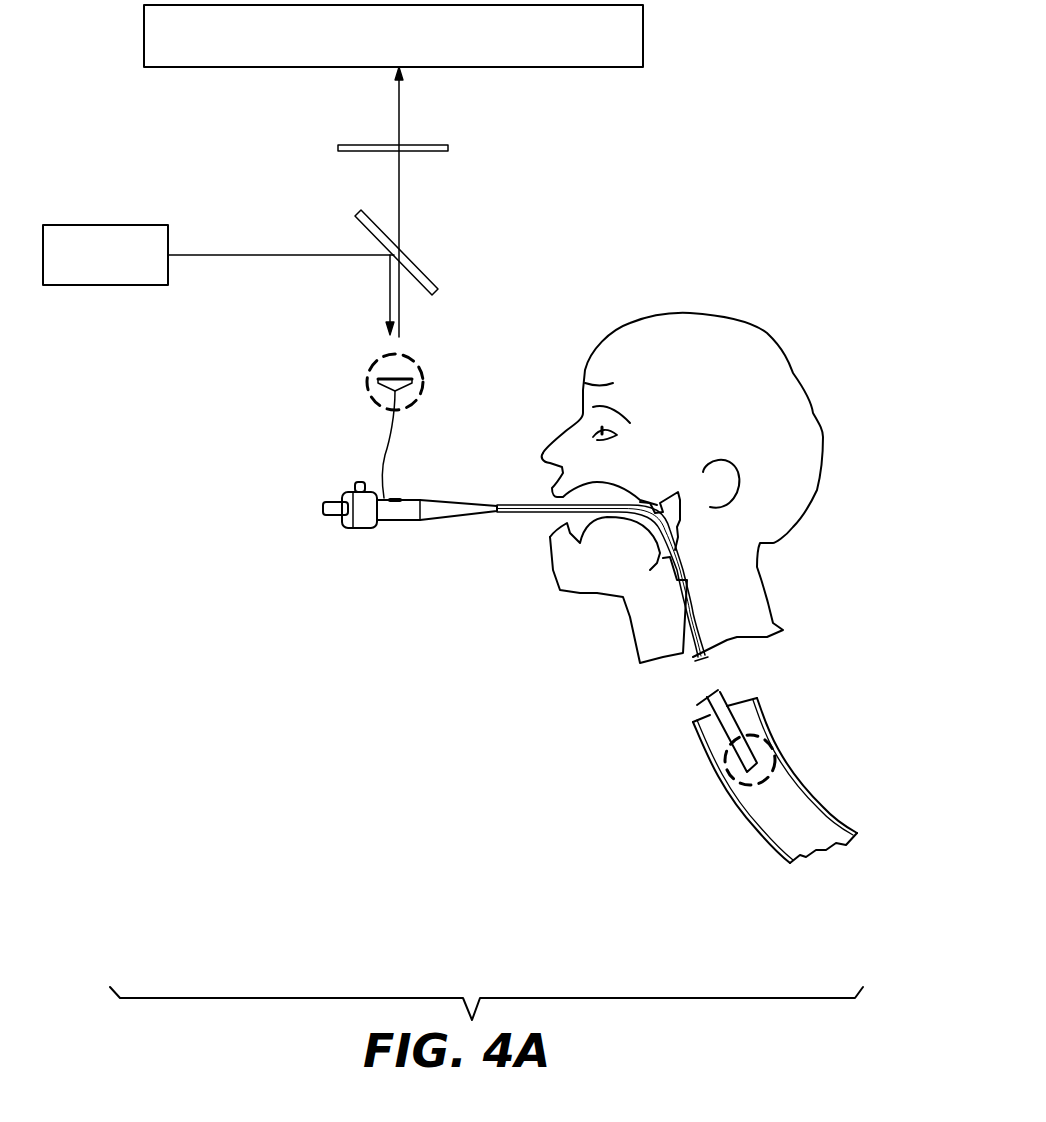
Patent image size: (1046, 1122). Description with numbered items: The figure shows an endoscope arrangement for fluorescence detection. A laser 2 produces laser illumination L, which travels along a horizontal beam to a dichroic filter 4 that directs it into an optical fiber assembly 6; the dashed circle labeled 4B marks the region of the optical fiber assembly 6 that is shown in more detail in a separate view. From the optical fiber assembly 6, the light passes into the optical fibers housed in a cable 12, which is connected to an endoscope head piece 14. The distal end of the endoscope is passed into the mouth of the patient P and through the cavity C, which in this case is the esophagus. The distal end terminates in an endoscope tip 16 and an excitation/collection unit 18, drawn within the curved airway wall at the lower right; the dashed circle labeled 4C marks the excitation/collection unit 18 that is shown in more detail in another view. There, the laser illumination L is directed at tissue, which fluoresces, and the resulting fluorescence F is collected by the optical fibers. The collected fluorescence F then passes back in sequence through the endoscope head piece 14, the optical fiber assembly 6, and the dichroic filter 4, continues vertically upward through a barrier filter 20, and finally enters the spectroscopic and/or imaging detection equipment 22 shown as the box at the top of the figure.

The laser 2 is at (62, 275).
The dichroic filter 4 is at (425, 282).
The detail view circle of lens (FIG. 4B) 4B is at (425, 377).
The detail view circle of distal end (FIG. 4C) 4C is at (723, 760).
The optical fiber assembly 6 is at (377, 397).
The cable 12 is at (380, 454).
The endoscope head piece 14 is at (364, 526).
The endoscope tip 16 is at (733, 780).
The excitation/collection unit 18 is at (772, 742).
The barrier filter 20 is at (450, 148).
The spectroscopic and/or imaging detection equipment 22 is at (643, 40).
The fluorescence F is at (401, 113).
The laser illumination L is at (272, 256).
The patient P is at (810, 442).
The cavity C is at (660, 548).